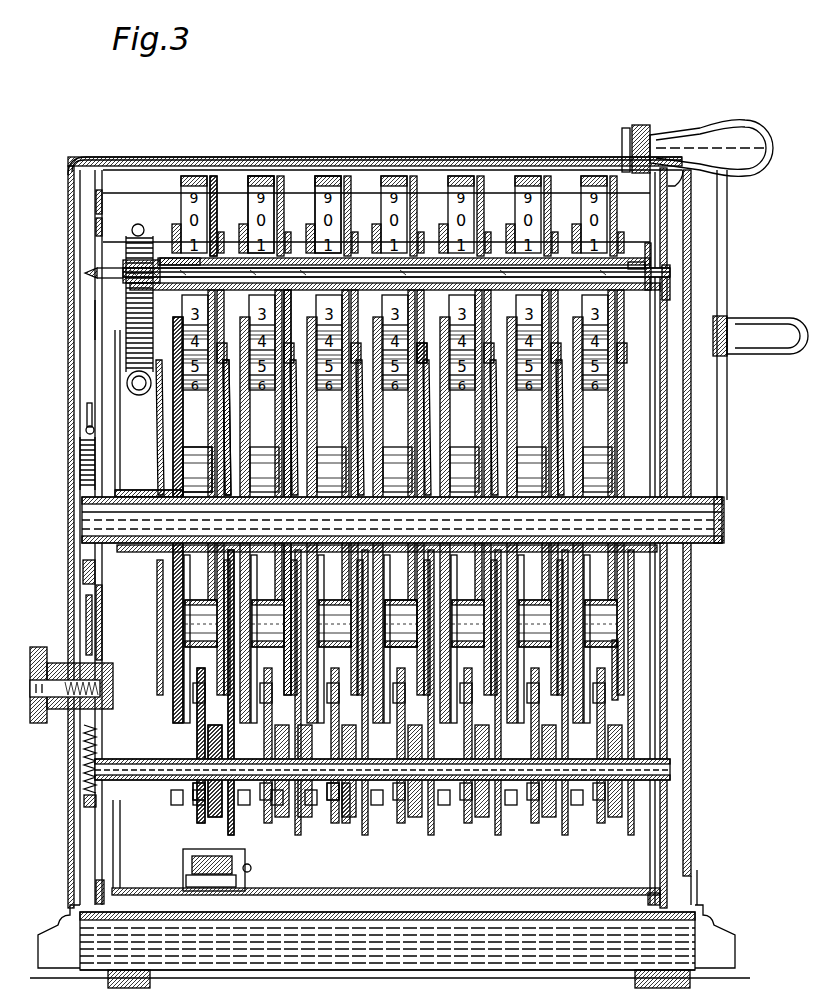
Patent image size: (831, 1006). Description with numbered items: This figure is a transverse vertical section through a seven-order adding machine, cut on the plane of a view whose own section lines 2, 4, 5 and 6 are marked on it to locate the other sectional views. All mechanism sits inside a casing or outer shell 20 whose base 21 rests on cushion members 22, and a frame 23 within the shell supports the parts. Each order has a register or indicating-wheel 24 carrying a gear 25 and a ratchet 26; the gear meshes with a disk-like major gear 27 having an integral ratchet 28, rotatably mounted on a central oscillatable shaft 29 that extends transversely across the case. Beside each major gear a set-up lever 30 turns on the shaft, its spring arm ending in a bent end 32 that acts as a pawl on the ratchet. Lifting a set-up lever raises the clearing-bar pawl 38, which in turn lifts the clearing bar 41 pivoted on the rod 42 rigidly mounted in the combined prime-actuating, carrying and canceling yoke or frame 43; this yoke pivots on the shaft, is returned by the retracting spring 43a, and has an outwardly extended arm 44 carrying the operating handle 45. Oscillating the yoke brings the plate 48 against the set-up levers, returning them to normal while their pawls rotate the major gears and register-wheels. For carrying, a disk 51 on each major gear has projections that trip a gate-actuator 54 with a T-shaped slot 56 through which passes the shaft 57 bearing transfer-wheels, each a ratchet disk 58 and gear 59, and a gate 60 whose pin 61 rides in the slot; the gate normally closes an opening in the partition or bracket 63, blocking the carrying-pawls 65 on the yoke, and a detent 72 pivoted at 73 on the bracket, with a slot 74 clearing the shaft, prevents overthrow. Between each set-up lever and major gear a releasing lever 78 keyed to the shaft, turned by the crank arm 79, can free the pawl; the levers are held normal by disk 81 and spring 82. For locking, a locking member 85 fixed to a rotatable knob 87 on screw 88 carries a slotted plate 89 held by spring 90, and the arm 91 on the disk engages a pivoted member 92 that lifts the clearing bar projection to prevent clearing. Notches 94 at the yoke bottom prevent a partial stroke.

The section line 2— 2 is at (653, 195).
The section line 4— 4 is at (563, 250).
The section line 5— 5 is at (166, 250).
The section line 6— 6 is at (78, 178).
The casing or outer shell 20 is at (692, 662).
The base 21 is at (735, 942).
The cushion members 22 is at (135, 982).
The frame 23 is at (104, 172).
The register or indicating-wheel 24 is at (522, 178).
The gear 25 is at (278, 178).
The ratchet 26 is at (414, 178).
The major gear 27 is at (618, 722).
The ratchet 28 is at (232, 415).
The central oscillatable shaft 29 is at (402, 524).
The set-up lever 30 is at (298, 392).
The bent end (pawl) 32 is at (356, 350).
The clearing-bar pawl 38 is at (222, 240).
The clearing bar 41 is at (170, 292).
The rod 42 is at (655, 270).
The combined prime-actuating, carrying and canceling yoke bar or frame 43 is at (142, 888).
The retracting spring 43a is at (140, 396).
The outwardly extended arm 44 is at (634, 126).
The operating handle 45 is at (732, 120).
The plate 48 is at (166, 256).
The disk 51 is at (176, 425).
The gate-actuator 54 is at (370, 594).
The T-shaped slot 56 is at (240, 762).
The shaft 57 is at (604, 778).
The ratchet disk 58 is at (280, 835).
The gear 59 is at (350, 830).
The gate 60 is at (512, 838).
The pin 61 is at (304, 760).
The partition or bracket 63 is at (222, 832).
The carrying-pawls 65 is at (240, 862).
The detent 72 is at (196, 734).
The pivot 73 is at (195, 692).
The slot 74 is at (196, 782).
The releasing lever 78 is at (232, 428).
The crank arm 79 is at (728, 402).
The disk 81 is at (83, 572).
The spring 82 is at (80, 452).
The locking member 85 is at (96, 643).
The rotatable knob 87 is at (60, 712).
The screw 88 is at (108, 690).
The slotted plate 89 is at (96, 608).
The spring 90 is at (84, 796).
The arm 91 is at (87, 408).
The pivoted member 92 is at (95, 318).
The notches 94 is at (641, 899).